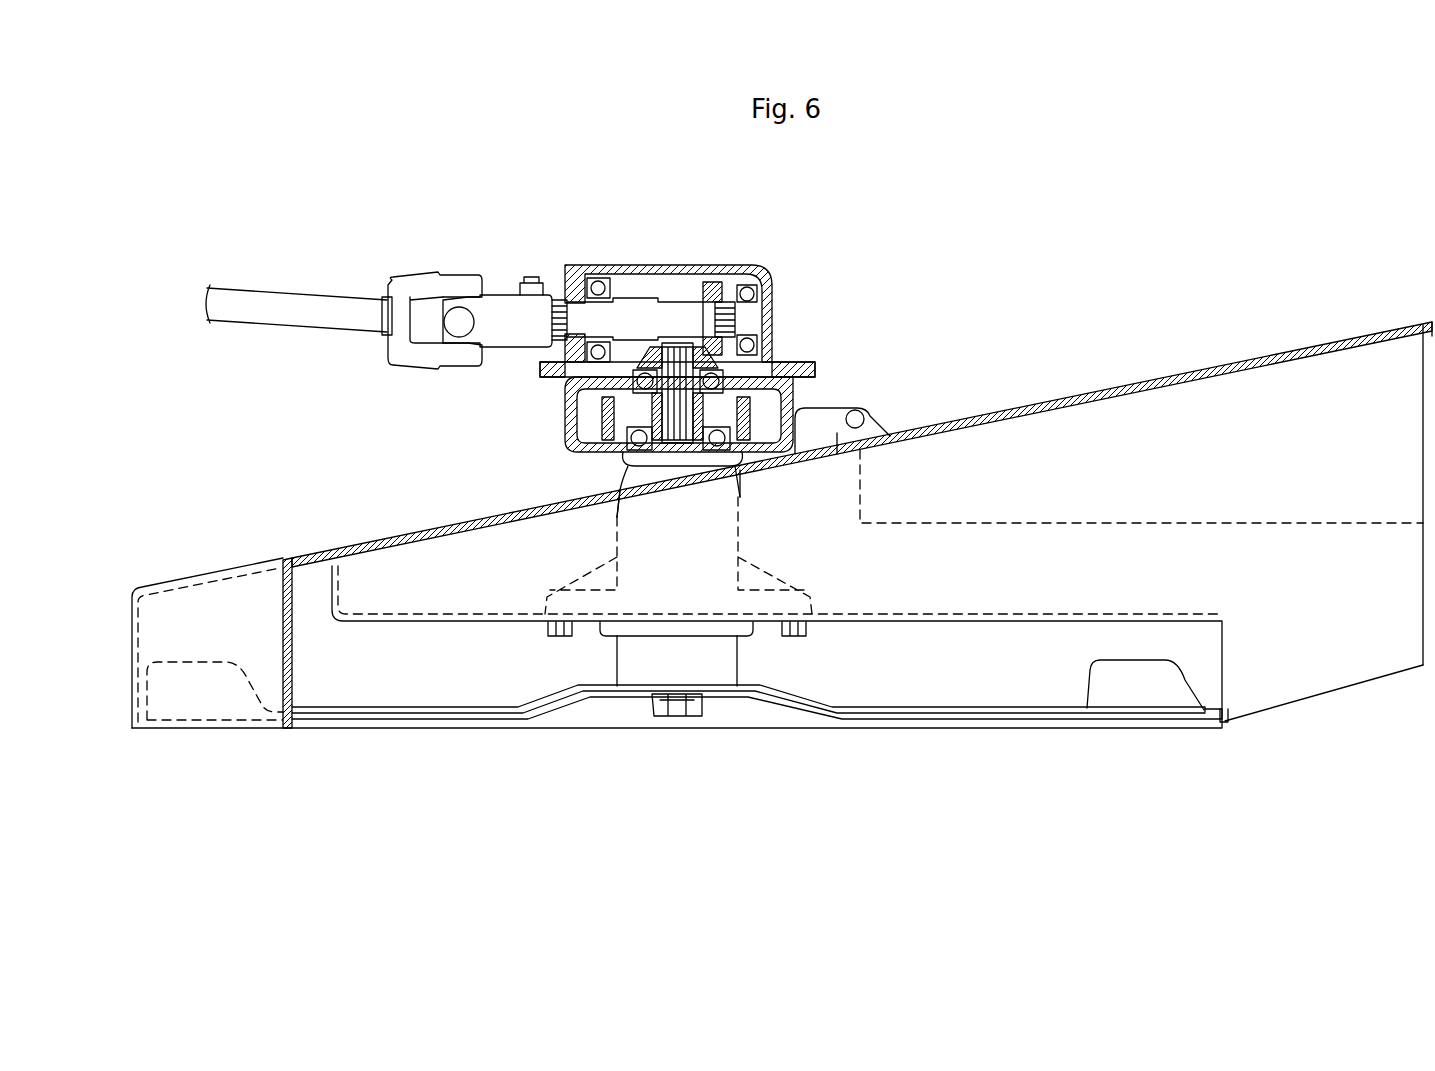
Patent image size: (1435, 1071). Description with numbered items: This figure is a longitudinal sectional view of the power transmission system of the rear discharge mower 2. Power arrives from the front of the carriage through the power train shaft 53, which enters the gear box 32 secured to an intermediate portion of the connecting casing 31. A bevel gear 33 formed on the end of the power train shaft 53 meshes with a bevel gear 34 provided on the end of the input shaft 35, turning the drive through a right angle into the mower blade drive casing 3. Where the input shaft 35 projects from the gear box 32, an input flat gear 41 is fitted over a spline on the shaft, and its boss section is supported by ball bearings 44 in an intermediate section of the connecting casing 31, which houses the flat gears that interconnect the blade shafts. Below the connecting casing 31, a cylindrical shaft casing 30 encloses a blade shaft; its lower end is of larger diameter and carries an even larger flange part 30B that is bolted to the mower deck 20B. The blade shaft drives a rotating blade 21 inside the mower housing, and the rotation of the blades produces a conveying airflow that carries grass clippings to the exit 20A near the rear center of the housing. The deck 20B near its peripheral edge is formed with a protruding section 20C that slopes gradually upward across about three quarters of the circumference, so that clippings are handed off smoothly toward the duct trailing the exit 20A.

The mower 2 is at (311, 552).
The mower blade drive casing 3 is at (812, 393).
The exit 20A is at (1298, 584).
The mower deck 20B is at (487, 612).
The protruding section 20C is at (460, 523).
The rotating blade 21 is at (903, 703).
The cylindrical shaft casing 30 is at (617, 552).
The flange part 30B is at (813, 598).
The connecting casing 31 is at (566, 411).
The gear box 32 is at (603, 263).
The bevel gear 33 is at (717, 293).
The bevel gear 34 is at (732, 366).
The input shaft 35 is at (681, 447).
The input flat gear 41 is at (766, 440).
The ball bearing 44 is at (634, 447).
The power train shaft 53 is at (637, 305).